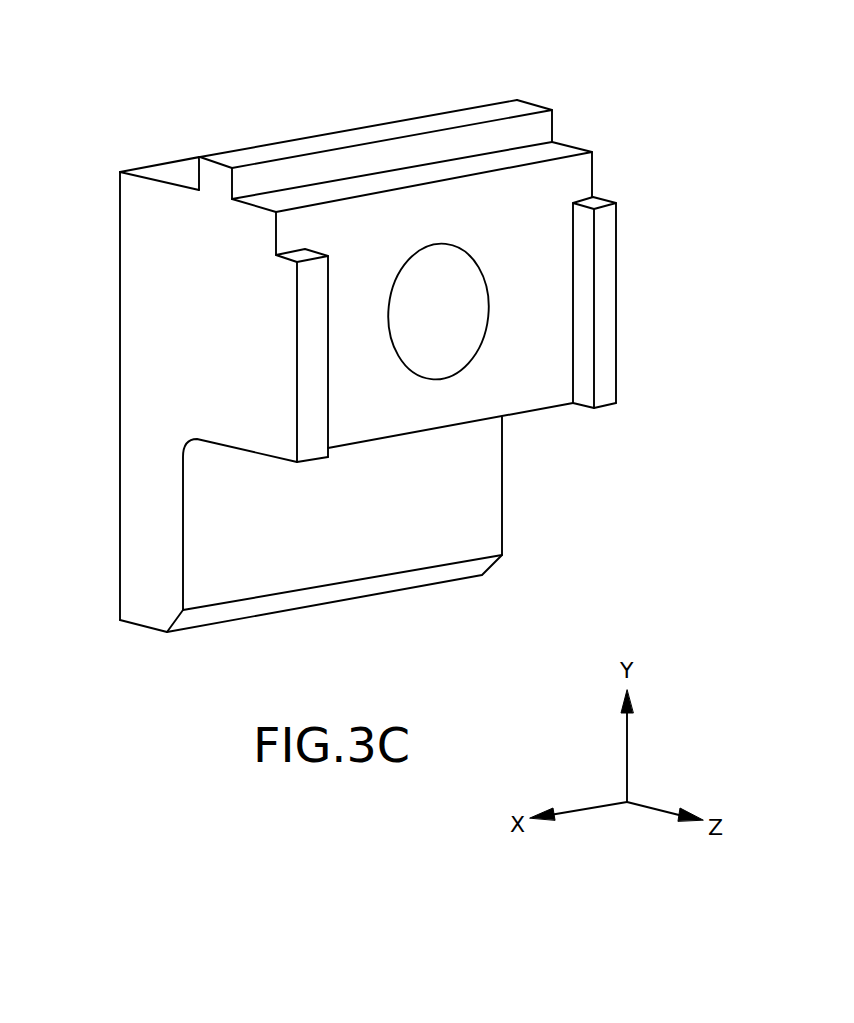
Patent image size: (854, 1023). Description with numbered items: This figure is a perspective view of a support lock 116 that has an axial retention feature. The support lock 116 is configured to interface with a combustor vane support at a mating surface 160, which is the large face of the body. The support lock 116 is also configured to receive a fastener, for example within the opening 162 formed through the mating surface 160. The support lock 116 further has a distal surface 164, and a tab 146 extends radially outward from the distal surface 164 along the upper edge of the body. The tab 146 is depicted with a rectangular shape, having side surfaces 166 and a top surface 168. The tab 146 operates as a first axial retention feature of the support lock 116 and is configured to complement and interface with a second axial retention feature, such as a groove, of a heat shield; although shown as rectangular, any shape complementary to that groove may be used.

The support lock 116 is at (160, 68).
The tab 146 is at (556, 82).
The mating surface 160 is at (368, 394).
The opening 162 is at (458, 358).
The distal surface 164 is at (167, 175).
The side surfaces 166 is at (537, 128).
The top surface 168 is at (432, 123).